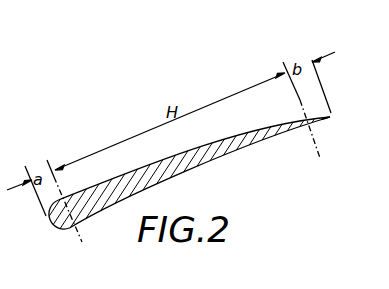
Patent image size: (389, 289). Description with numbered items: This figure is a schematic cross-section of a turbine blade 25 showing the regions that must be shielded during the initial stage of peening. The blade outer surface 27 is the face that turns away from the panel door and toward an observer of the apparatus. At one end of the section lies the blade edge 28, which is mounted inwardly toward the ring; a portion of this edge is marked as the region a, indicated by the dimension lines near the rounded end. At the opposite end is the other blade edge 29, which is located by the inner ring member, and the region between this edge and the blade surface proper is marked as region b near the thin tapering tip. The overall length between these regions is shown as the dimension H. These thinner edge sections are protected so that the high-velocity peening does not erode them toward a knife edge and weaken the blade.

The blade airfoil section 25 is at (207, 187).
The blade outer surface 27 is at (250, 131).
The blade edge 28 is at (54, 226).
The blade edge 29 is at (331, 117).